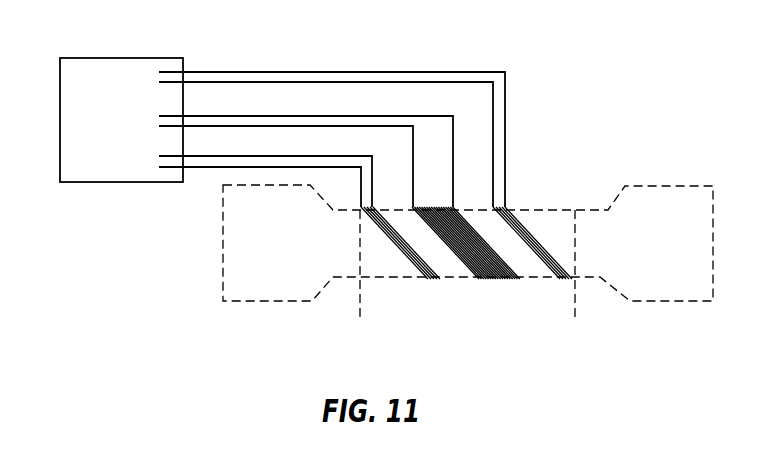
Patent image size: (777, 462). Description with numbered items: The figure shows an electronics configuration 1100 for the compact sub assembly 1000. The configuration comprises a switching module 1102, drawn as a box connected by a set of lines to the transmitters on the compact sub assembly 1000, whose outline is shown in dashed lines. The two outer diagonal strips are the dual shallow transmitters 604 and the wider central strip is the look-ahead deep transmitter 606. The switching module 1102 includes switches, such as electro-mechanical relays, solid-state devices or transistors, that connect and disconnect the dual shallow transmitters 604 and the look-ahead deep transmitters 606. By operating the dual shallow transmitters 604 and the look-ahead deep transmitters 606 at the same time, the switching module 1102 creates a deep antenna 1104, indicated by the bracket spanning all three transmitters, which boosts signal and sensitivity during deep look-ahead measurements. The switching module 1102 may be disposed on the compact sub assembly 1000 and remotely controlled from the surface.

The electronics configuration 1100 is at (489, 36).
The switching module 1102 is at (122, 57).
The compact sub assembly 1000 is at (606, 149).
The dual shallow transmitters 604 is at (388, 238).
The look-ahead deep transmitters 606 is at (502, 280).
The deep antenna 1104 is at (577, 313).